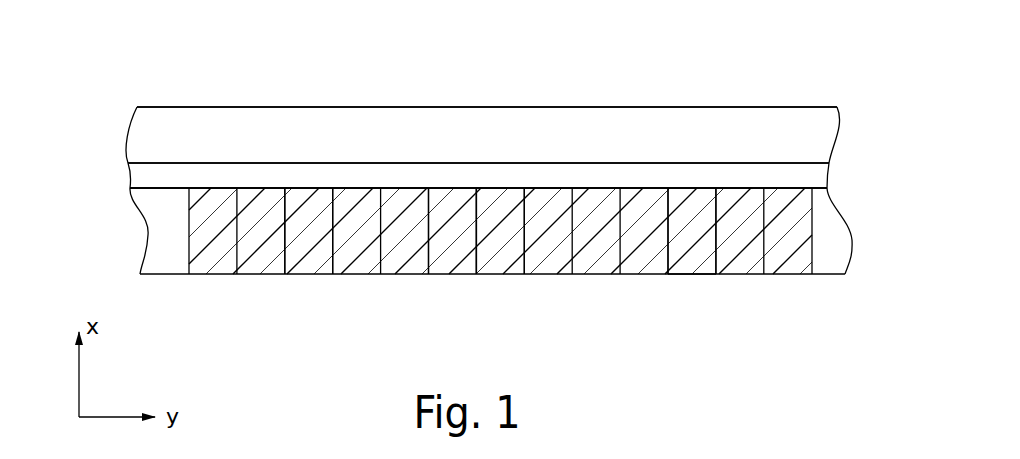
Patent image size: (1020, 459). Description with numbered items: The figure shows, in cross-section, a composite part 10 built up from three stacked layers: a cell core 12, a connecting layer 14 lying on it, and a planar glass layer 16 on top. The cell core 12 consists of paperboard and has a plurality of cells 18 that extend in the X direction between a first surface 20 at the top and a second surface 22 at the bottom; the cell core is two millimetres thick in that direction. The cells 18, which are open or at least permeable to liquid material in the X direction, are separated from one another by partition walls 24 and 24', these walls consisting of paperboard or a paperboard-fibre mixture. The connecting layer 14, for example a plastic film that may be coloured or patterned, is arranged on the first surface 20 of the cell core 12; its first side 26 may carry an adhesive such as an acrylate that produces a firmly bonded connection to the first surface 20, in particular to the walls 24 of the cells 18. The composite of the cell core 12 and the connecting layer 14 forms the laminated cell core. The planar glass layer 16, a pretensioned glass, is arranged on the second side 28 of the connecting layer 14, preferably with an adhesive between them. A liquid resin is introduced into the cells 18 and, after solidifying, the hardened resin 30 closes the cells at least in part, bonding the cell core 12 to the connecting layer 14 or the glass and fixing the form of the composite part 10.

The composite part 10 is at (844, 177).
The cell core 12 is at (794, 293).
The connecting layer 14 is at (137, 178).
The planar glass layer 16 is at (484, 135).
The cells 18 is at (593, 260).
The first surface 20 is at (730, 190).
The second surface 22 is at (690, 275).
The partition wall 24 is at (493, 280).
The partition wall 24' is at (442, 280).
The first side 26 is at (645, 188).
The second side 28 is at (558, 163).
The hardened resin 30 is at (313, 262).